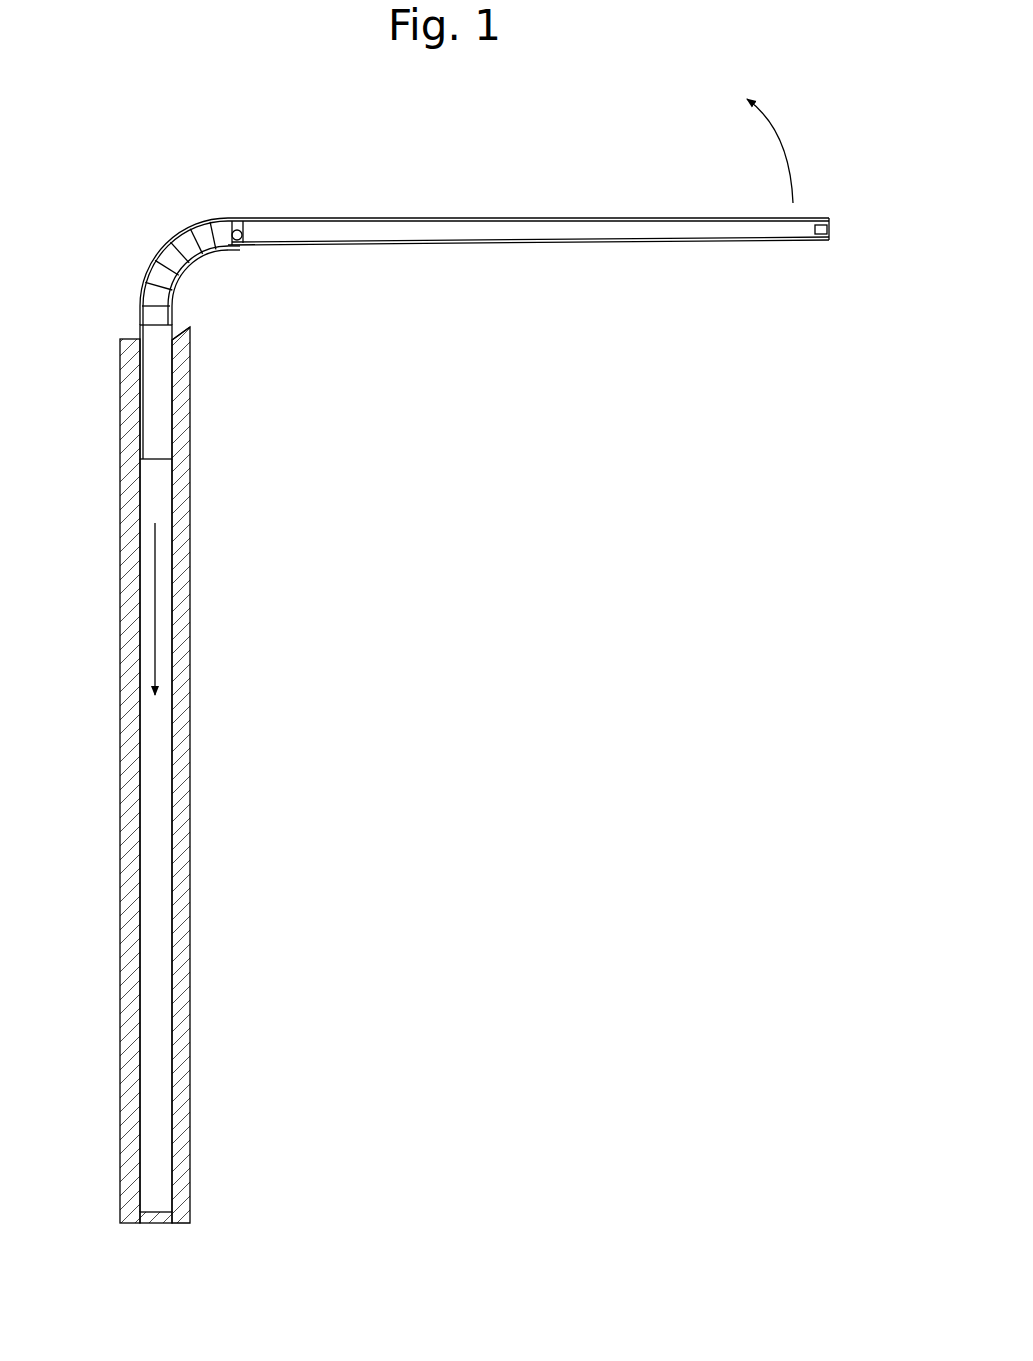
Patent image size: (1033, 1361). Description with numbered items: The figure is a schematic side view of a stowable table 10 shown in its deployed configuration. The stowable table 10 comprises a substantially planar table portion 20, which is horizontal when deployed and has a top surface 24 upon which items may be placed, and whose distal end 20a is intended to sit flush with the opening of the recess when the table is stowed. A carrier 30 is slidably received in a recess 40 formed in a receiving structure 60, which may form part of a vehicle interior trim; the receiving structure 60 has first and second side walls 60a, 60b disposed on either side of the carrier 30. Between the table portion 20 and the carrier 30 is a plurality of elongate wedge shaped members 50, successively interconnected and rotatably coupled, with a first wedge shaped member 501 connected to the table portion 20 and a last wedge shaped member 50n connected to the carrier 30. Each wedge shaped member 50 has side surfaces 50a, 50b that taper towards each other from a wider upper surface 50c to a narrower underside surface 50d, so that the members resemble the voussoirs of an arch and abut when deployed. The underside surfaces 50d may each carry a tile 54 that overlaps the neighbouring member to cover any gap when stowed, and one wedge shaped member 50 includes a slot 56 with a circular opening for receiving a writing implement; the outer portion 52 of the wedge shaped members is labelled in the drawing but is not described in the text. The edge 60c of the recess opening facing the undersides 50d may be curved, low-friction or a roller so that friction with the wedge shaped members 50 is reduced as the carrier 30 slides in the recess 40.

The stowable table 10 is at (223, 148).
The table portion 20 is at (624, 246).
The distal end of the table portion 20a is at (831, 228).
The top surface 24 is at (618, 216).
The carrier 30 is at (160, 430).
The recess 40 is at (157, 738).
The wedge shaped members 50 is at (166, 228).
The side surface 50a is at (160, 285).
The side surface 50b is at (172, 262).
The upper surface 50c is at (168, 272).
The underside surface 50d is at (190, 292).
The last wedge shaped member 50n is at (148, 318).
The first wedge shaped member 501 is at (241, 252).
The outer plate 52 is at (232, 217).
The tile 54 is at (205, 280).
The slot 56 is at (245, 222).
The receiving structure 60 is at (130, 810).
The first side wall 60a is at (130, 887).
The second side wall 60b is at (183, 833).
The edge of the recess opening 60c is at (178, 333).